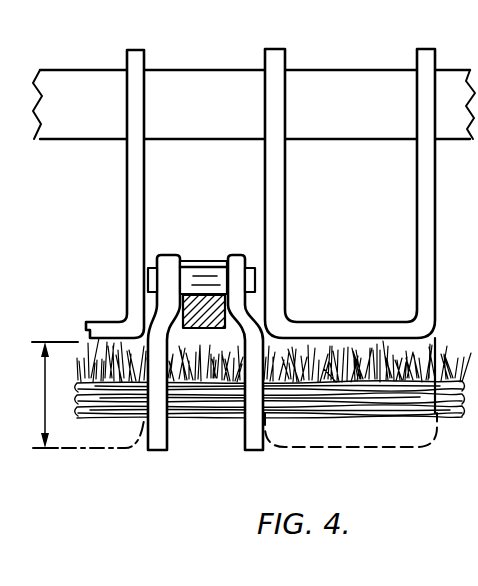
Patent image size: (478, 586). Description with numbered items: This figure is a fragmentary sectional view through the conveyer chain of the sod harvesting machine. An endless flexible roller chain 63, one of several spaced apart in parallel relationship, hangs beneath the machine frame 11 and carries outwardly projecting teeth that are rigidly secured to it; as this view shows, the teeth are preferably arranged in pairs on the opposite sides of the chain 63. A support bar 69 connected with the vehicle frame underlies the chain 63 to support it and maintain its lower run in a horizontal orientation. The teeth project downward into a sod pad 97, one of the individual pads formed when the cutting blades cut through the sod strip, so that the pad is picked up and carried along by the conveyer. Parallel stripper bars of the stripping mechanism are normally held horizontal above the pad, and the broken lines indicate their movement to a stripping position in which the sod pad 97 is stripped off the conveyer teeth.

The frame 11 is at (355, 85).
The roller chain 63 is at (207, 262).
The support bar 69 is at (226, 312).
The sod pad 97 is at (460, 401).